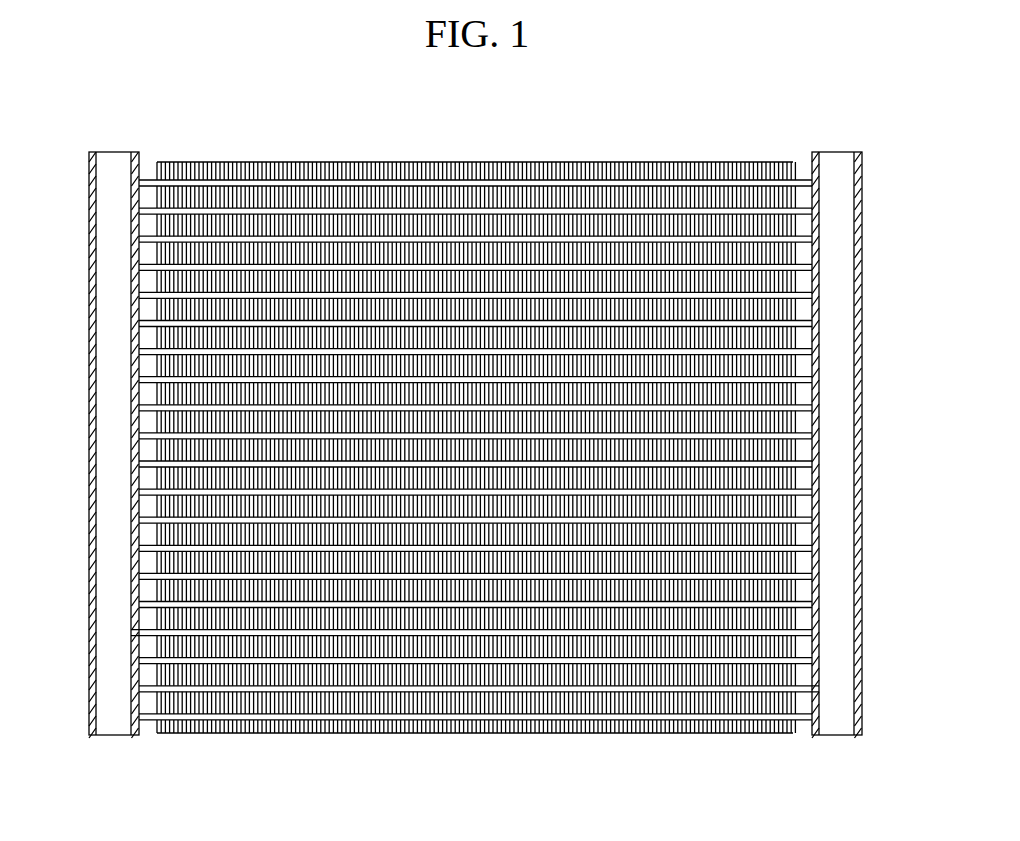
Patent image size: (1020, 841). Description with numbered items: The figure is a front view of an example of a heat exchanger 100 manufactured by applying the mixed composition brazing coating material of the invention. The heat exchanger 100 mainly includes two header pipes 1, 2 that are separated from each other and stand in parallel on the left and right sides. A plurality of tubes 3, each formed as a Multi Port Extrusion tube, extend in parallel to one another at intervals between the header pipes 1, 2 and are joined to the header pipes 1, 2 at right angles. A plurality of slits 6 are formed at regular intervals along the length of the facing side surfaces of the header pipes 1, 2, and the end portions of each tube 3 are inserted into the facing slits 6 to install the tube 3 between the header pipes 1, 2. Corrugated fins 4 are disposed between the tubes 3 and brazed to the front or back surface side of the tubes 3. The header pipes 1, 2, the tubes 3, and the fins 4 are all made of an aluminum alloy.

The heat exchanger 100 is at (892, 138).
The header pipe 1 is at (118, 297).
The header pipe 2 is at (835, 578).
The tube 3 is at (683, 184).
The corrugated fin 4 is at (279, 172).
The slit 6 is at (135, 633).